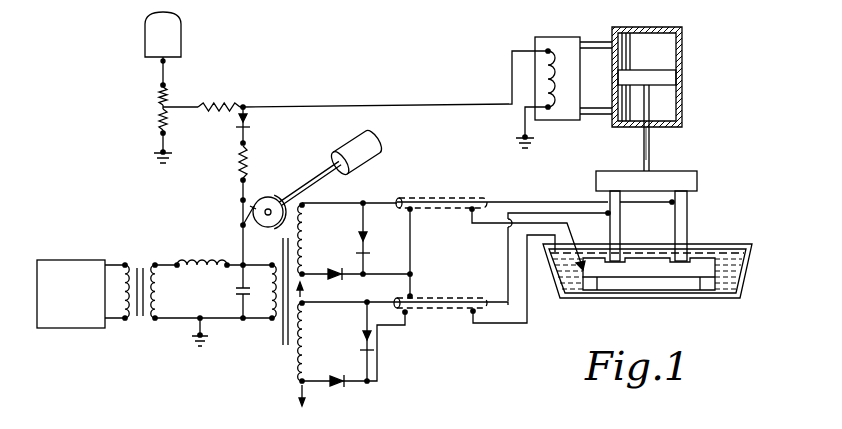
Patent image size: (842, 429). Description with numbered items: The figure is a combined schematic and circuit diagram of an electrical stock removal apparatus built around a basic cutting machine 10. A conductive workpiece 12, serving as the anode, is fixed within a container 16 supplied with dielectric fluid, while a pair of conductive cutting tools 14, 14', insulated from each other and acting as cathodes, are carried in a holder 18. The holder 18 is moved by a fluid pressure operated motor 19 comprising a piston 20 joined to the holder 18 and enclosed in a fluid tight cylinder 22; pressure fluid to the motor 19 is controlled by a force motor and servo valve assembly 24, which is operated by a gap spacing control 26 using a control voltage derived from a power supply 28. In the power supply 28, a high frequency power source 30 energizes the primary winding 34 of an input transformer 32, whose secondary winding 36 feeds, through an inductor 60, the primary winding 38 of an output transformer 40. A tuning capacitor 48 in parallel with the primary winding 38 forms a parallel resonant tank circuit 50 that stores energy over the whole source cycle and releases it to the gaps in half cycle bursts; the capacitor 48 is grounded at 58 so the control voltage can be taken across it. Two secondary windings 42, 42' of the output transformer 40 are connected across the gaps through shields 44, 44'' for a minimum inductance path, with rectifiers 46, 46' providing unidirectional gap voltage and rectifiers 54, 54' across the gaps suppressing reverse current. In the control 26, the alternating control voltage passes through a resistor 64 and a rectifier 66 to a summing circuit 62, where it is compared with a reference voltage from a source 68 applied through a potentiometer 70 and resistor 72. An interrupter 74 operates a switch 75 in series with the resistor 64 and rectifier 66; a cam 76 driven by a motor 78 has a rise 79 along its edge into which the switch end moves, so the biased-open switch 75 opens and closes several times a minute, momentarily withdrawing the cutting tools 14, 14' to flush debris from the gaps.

The cutting machine 10 is at (705, 166).
The workpiece 12 is at (665, 286).
The cutting tool 14 is at (634, 226).
The cutting tool 14' is at (703, 226).
The container 16 is at (750, 272).
The holder 18 is at (698, 183).
The fluid pressure operated motor 19 is at (690, 103).
The piston 20 is at (683, 76).
The cylinder 22 is at (683, 45).
The force motor and servo valve assembly 24 is at (559, 37).
The gap spacing control 26 is at (218, 80).
The power supply 28 is at (369, 388).
The high frequency power source 30 is at (53, 258).
The input transformer 32 is at (140, 330).
The primary winding 34 is at (122, 322).
The secondary winding 36 is at (151, 262).
The primary winding 38 is at (274, 326).
The output transformer 40 is at (284, 350).
The secondary winding 42 is at (346, 342).
The secondary winding 42' is at (347, 239).
The shield 44 is at (502, 275).
The shield 44'' is at (535, 230).
The rectifier 46 is at (343, 396).
The rectifier 46' is at (362, 263).
The tuning capacitor 48 is at (240, 292).
The tank circuit 50 is at (250, 326).
The rectifier 54 is at (381, 341).
The rectifier 54' is at (379, 238).
The ground 58 is at (197, 340).
The inductor 60 is at (200, 262).
The summing circuit 62 is at (250, 105).
The resistor 64 is at (240, 165).
The rectifier 66 is at (250, 127).
The source 68 is at (181, 36).
The potentiometer 70 is at (170, 107).
The resistor 72 is at (215, 104).
The interrupter 74 is at (306, 178).
The switch 75 is at (245, 216).
The cam 76 is at (274, 199).
The motor 78 is at (366, 167).
The rise 79 is at (266, 228).